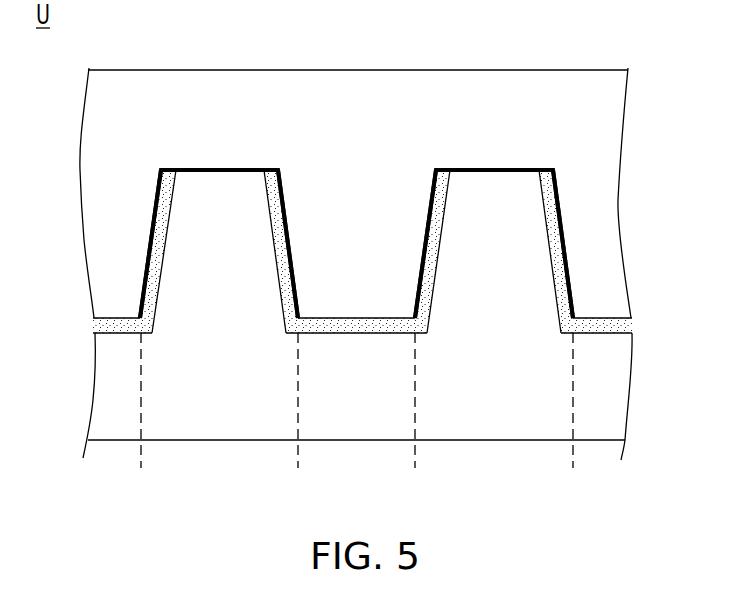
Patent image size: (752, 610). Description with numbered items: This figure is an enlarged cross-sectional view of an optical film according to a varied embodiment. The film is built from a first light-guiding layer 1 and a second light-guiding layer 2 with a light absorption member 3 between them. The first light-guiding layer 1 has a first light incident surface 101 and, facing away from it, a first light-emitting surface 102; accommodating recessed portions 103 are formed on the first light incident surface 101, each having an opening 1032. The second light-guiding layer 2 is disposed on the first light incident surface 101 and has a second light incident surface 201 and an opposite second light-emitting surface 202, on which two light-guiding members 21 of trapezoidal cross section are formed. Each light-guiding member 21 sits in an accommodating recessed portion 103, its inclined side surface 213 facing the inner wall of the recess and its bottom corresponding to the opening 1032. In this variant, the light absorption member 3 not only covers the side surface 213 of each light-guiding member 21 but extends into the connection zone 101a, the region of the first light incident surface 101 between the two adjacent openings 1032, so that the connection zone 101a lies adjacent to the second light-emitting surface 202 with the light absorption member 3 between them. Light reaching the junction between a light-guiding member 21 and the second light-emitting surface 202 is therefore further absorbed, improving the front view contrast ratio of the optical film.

The first light-guiding layer 1 is at (513, 53).
The first light incident surface 101 is at (604, 322).
The connection zone 101a is at (363, 318).
The first light-emitting surface 102 is at (583, 70).
The accommodating recessed portion 103 is at (243, 168).
The opening 1032 is at (298, 462).
The second light-guiding layer 2 is at (592, 453).
The second light incident surface 201 is at (118, 440).
The second light-emitting surface 202 is at (113, 332).
The light-guiding member 21 is at (232, 272).
The side surface 213 is at (168, 210).
The light absorption member 3 is at (166, 245).